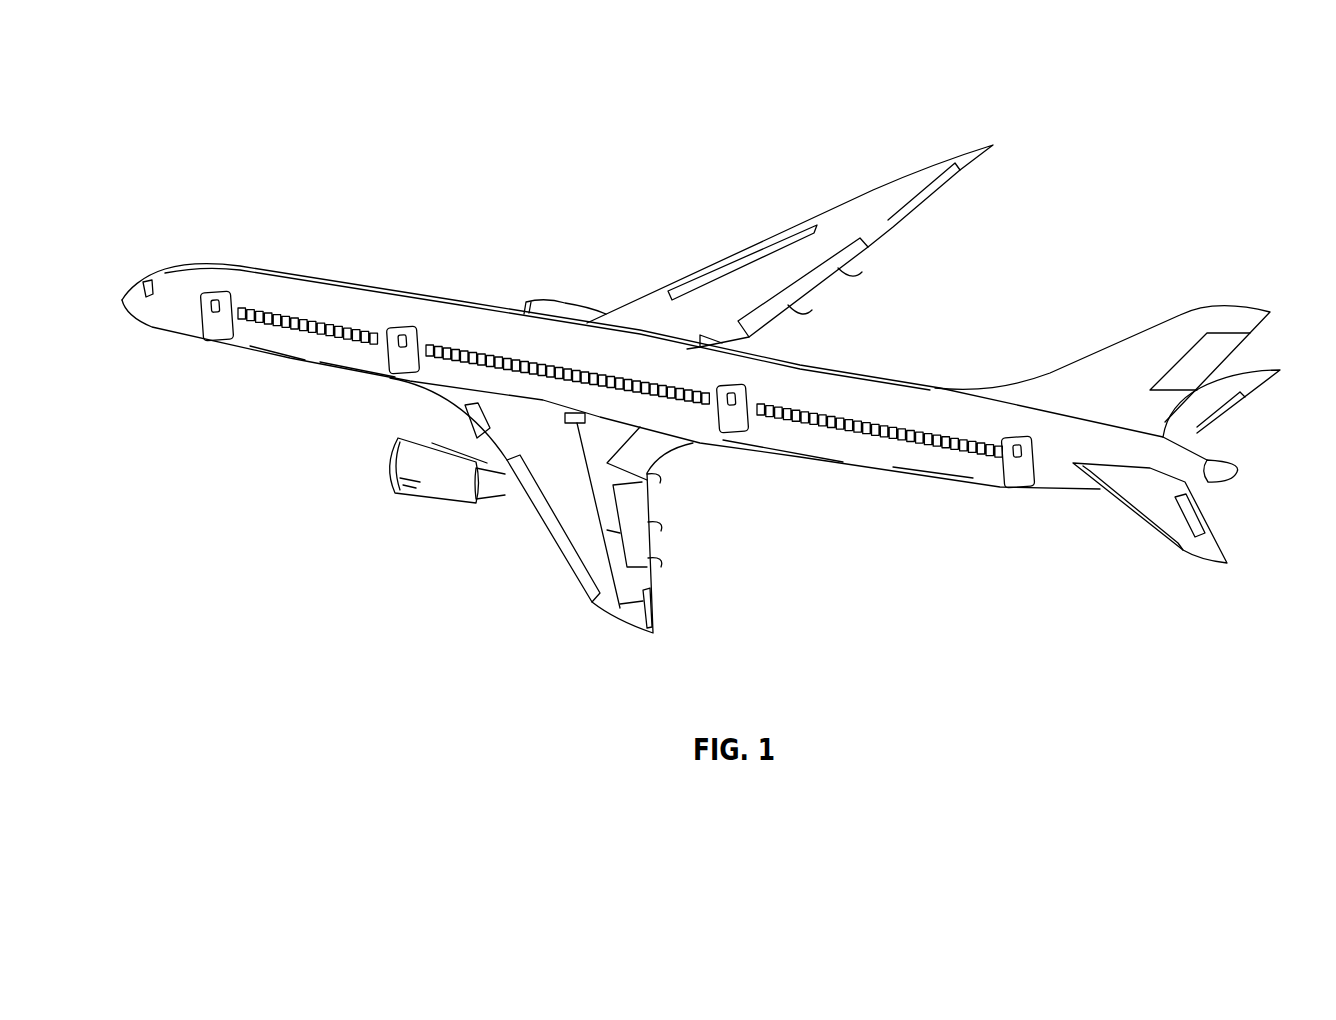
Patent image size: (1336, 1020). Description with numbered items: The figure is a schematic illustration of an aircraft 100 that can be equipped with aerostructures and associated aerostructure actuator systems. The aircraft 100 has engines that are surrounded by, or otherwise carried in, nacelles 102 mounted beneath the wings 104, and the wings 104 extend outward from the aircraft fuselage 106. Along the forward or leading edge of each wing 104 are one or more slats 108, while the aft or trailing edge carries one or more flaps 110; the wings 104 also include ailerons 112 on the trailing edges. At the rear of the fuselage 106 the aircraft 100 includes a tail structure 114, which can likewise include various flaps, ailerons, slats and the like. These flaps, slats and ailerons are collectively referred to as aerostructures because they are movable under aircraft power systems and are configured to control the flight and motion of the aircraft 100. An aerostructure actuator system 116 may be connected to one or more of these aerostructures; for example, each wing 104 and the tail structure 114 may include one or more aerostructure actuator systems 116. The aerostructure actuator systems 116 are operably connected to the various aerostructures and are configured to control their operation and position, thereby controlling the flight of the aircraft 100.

The aircraft 100 is at (1160, 146).
The nacelles 102 is at (550, 305).
The wings 104 is at (868, 195).
The aircraft fuselage 106 is at (374, 296).
The slats 108 is at (801, 231).
The flaps 110 is at (830, 288).
The ailerons 112 is at (927, 198).
The tail structure 114 is at (1133, 527).
The aerostructure actuator system 116 is at (577, 455).